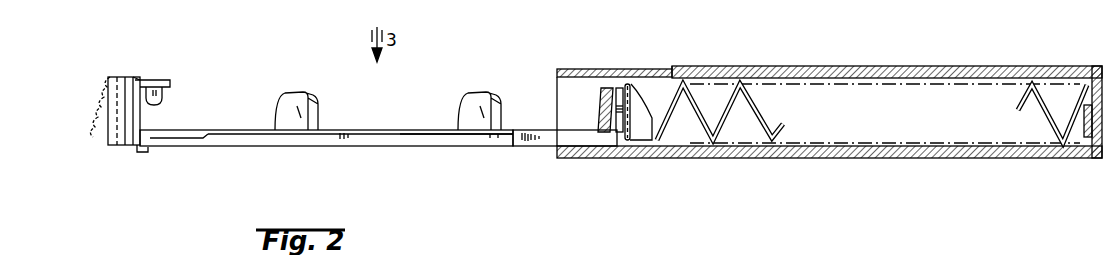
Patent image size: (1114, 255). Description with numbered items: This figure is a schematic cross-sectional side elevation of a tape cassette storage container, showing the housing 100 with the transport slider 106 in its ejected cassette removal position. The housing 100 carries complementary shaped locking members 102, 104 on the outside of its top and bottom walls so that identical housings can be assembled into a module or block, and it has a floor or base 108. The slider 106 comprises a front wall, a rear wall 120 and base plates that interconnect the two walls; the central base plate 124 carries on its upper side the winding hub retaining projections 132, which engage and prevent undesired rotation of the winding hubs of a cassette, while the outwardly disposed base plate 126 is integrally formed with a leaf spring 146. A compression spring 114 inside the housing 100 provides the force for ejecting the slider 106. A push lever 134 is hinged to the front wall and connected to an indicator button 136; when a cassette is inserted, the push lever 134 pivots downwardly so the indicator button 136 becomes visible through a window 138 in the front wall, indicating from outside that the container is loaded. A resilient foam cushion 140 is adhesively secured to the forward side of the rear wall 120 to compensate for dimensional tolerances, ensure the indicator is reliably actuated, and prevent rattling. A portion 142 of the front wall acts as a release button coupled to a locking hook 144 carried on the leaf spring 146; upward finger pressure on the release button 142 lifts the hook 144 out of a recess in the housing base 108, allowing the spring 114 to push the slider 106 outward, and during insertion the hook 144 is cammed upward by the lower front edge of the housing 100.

The housing 100 is at (829, 130).
The locking member 102 is at (845, 66).
The locking member 104 is at (848, 158).
The transport slider 106 is at (378, 162).
The base 108 is at (672, 146).
The compression spring 114 is at (1052, 128).
The rear wall 120 is at (619, 88).
The central base plate 124 is at (514, 147).
The base plate 126 is at (478, 147).
The winding hub retaining projections 132 is at (290, 95).
The push lever 134 is at (158, 80).
The indicator button 136 is at (165, 94).
The window 138 is at (108, 118).
The resilient foam cushion 140 is at (600, 100).
The release button 142 is at (159, 116).
The locking hook 144 is at (150, 153).
The leaf spring 146 is at (190, 146).